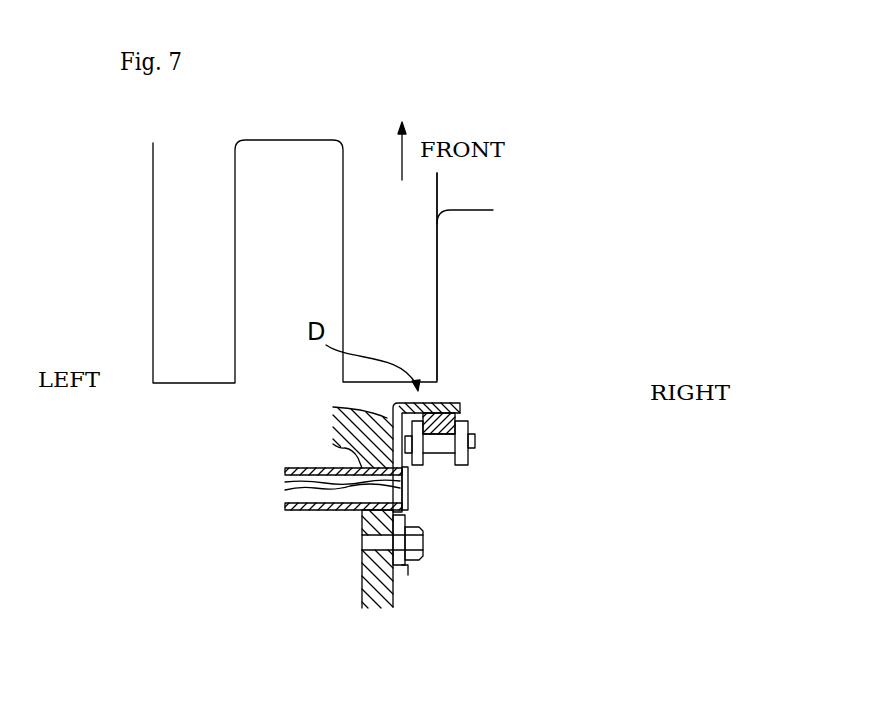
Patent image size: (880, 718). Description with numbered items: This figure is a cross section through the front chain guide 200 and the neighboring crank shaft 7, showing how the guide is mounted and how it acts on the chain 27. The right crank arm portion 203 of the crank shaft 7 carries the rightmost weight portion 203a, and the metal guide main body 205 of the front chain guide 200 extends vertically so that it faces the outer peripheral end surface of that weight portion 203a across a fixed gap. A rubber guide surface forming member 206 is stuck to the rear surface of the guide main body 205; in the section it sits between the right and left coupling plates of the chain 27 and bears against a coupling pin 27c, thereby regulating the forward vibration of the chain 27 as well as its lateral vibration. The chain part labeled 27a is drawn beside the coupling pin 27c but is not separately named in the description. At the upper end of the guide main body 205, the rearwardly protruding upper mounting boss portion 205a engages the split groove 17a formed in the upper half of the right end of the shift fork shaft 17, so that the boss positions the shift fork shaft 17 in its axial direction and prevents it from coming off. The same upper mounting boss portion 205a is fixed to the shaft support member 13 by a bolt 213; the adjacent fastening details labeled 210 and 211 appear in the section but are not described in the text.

The crank shaft 7 is at (498, 187).
The shaft support member 13 is at (367, 582).
The shift fork shaft 17 is at (314, 512).
The split groove 17a is at (288, 497).
The chain 27 is at (513, 467).
The bolt 27a is at (470, 455).
The coupling pin 27c is at (437, 438).
The front chain guide 200 is at (481, 426).
The right crank arm portion 203 is at (169, 402).
The rightmost weight portion 203a is at (425, 315).
The guide main body 205 is at (458, 404).
The upper mounting boss portion 205a is at (350, 432).
The guide surface forming member 206 is at (458, 418).
The washer 210 is at (397, 566).
The bolt 211 is at (362, 533).
The bolt 213 is at (420, 566).